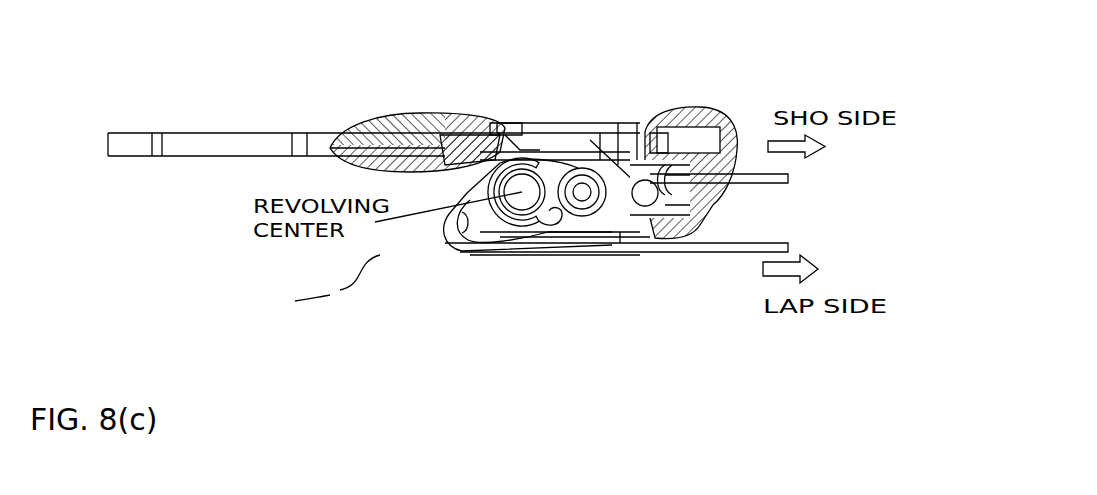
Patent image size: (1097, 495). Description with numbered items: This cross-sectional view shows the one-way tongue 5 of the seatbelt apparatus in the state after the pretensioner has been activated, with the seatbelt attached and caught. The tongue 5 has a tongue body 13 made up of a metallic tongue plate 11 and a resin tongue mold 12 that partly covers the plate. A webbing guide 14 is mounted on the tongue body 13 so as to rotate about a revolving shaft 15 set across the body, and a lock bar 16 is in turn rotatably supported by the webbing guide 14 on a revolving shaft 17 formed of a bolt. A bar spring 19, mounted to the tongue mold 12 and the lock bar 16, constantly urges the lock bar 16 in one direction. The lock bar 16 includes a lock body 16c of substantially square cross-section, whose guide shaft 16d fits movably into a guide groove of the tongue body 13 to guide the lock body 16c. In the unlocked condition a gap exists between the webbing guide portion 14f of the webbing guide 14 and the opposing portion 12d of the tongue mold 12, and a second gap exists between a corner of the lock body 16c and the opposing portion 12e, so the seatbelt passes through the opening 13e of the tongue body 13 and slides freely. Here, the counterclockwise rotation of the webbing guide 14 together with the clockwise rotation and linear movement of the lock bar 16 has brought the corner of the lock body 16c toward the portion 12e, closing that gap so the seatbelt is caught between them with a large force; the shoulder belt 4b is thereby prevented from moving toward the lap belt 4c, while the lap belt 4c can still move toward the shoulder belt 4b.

The tongue plate 11 is at (250, 146).
The tongue body 13 is at (397, 100).
The portion of the tongue mold 12d is at (450, 150).
The opening of the tongue body 13e is at (497, 128).
The revolving shaft 15 is at (525, 185).
The revolving shaft 17 is at (582, 190).
The guide shaft 16d is at (628, 188).
The portion of the tongue mold 12e is at (660, 140).
The tongue mold 12 is at (722, 116).
The bar spring 19 is at (702, 200).
The shoulder belt 4b is at (777, 184).
The lap belt 4c is at (703, 249).
The tongue 5 is at (357, 256).
The webbing guide portion 14f is at (467, 248).
The webbing guide 14 is at (500, 228).
The lock bar 16 is at (603, 220).
The lock body 16c is at (630, 220).